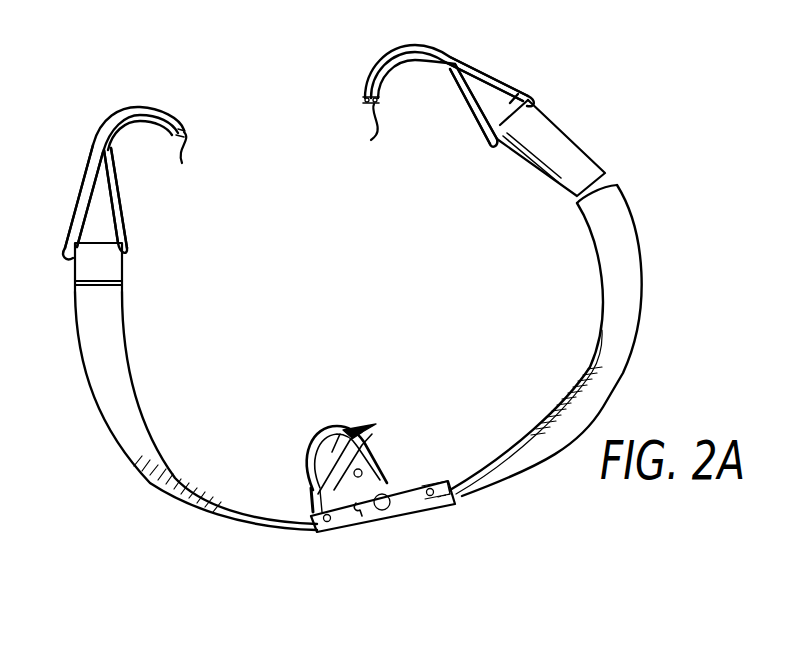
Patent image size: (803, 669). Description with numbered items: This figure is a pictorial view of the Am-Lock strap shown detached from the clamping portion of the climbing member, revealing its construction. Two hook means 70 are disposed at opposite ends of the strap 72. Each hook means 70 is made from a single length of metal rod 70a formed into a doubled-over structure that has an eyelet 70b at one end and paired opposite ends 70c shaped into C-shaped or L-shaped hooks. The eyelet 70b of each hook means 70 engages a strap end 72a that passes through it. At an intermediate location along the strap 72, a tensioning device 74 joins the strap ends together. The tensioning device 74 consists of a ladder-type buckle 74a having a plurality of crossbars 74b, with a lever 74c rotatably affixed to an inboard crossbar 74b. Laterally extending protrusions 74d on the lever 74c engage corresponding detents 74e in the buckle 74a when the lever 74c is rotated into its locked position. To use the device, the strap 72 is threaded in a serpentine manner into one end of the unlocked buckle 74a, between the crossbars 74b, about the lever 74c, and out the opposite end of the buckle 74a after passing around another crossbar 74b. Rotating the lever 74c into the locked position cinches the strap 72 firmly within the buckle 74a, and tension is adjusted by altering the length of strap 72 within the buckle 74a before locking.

The hook means 70 is at (74, 150).
The metal rod 70a is at (124, 227).
The eyelet 70b is at (94, 212).
The paired opposite ends 70c is at (280, 137).
The strap 72 is at (136, 426).
The strap end 72a is at (106, 270).
The tensioning device 74 is at (302, 543).
The ladder-type buckle 74a is at (425, 480).
The crossbars 74b is at (313, 538).
The lever 74c is at (343, 430).
The laterally extending protrusions 74d is at (364, 470).
The detents 74e is at (358, 532).